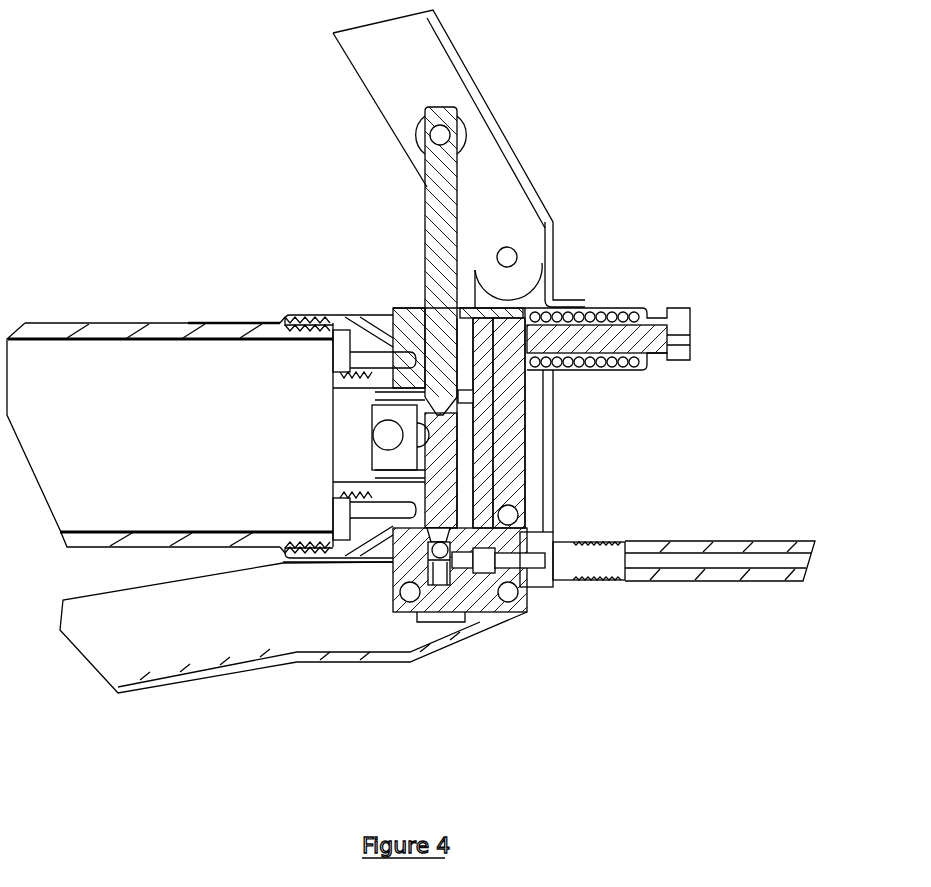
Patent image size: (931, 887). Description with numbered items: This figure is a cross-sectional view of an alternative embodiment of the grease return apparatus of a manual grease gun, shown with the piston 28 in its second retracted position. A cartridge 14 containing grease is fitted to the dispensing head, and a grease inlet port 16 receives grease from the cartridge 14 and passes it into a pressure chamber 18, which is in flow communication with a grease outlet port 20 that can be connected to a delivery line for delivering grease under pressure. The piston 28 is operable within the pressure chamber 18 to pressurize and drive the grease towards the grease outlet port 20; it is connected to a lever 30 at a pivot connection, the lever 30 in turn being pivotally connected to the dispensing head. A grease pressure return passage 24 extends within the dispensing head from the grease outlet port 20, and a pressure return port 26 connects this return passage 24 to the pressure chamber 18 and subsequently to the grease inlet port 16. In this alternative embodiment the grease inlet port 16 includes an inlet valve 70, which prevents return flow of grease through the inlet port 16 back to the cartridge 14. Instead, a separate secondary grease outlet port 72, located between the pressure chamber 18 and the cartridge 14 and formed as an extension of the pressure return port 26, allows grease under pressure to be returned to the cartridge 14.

The cartridge 14 is at (130, 323).
The grease inlet port 16 is at (424, 437).
The pressure chamber 18 is at (447, 502).
The grease outlet port 20 is at (527, 610).
The grease pressure return passage 24 is at (490, 458).
The pressure return port 26 is at (473, 398).
The piston 28 is at (427, 227).
The lever 30 is at (412, 57).
The inlet valve 70 is at (350, 358).
The secondary grease outlet port 72 is at (392, 348).